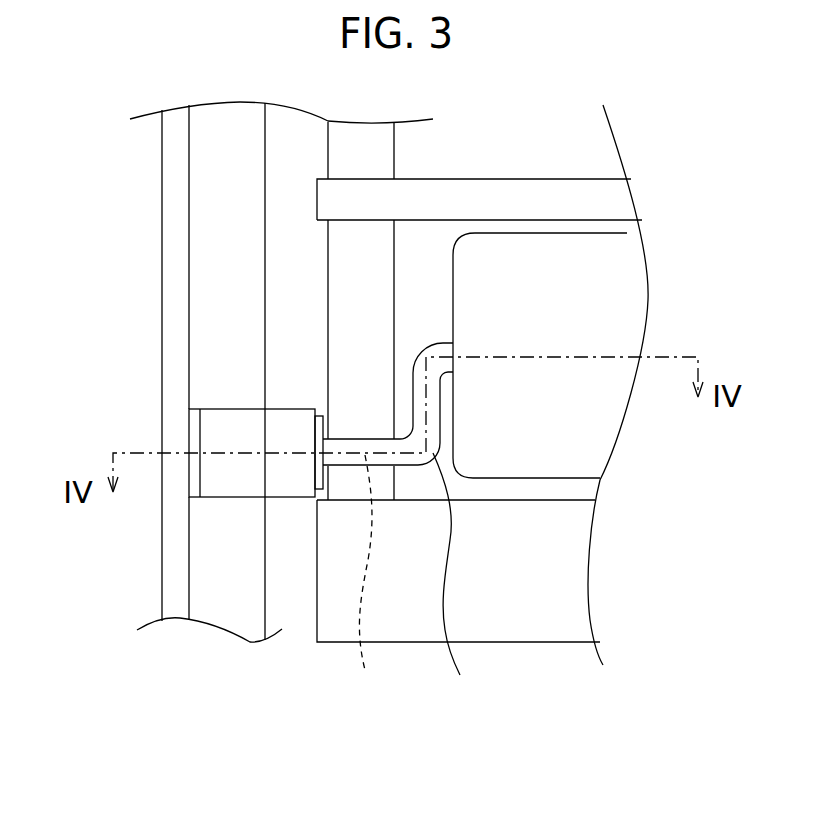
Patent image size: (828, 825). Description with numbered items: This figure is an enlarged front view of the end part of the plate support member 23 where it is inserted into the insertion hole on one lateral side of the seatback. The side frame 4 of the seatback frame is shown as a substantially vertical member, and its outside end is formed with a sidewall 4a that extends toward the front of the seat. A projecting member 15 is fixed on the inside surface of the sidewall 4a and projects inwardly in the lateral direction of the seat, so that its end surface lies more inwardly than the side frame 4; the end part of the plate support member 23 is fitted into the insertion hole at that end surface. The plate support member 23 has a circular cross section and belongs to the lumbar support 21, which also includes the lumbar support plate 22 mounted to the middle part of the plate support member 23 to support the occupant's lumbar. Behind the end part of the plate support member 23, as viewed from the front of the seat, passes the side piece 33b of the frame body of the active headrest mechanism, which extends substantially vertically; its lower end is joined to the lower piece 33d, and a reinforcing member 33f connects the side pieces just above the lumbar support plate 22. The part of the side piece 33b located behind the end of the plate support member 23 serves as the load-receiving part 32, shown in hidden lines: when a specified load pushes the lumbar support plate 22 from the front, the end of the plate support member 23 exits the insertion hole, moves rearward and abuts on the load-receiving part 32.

The side frame 4 is at (218, 188).
The sidewall 4a is at (162, 243).
The side piece 33b is at (328, 325).
The reinforcing member 33f is at (492, 179).
The lower piece 33d is at (557, 643).
The lumbar support 21 is at (555, 233).
The lumbar support plate 22 is at (623, 232).
The projecting member 15 is at (238, 498).
The plate support member 23 is at (454, 583).
The load-receiving part 32 is at (363, 584).